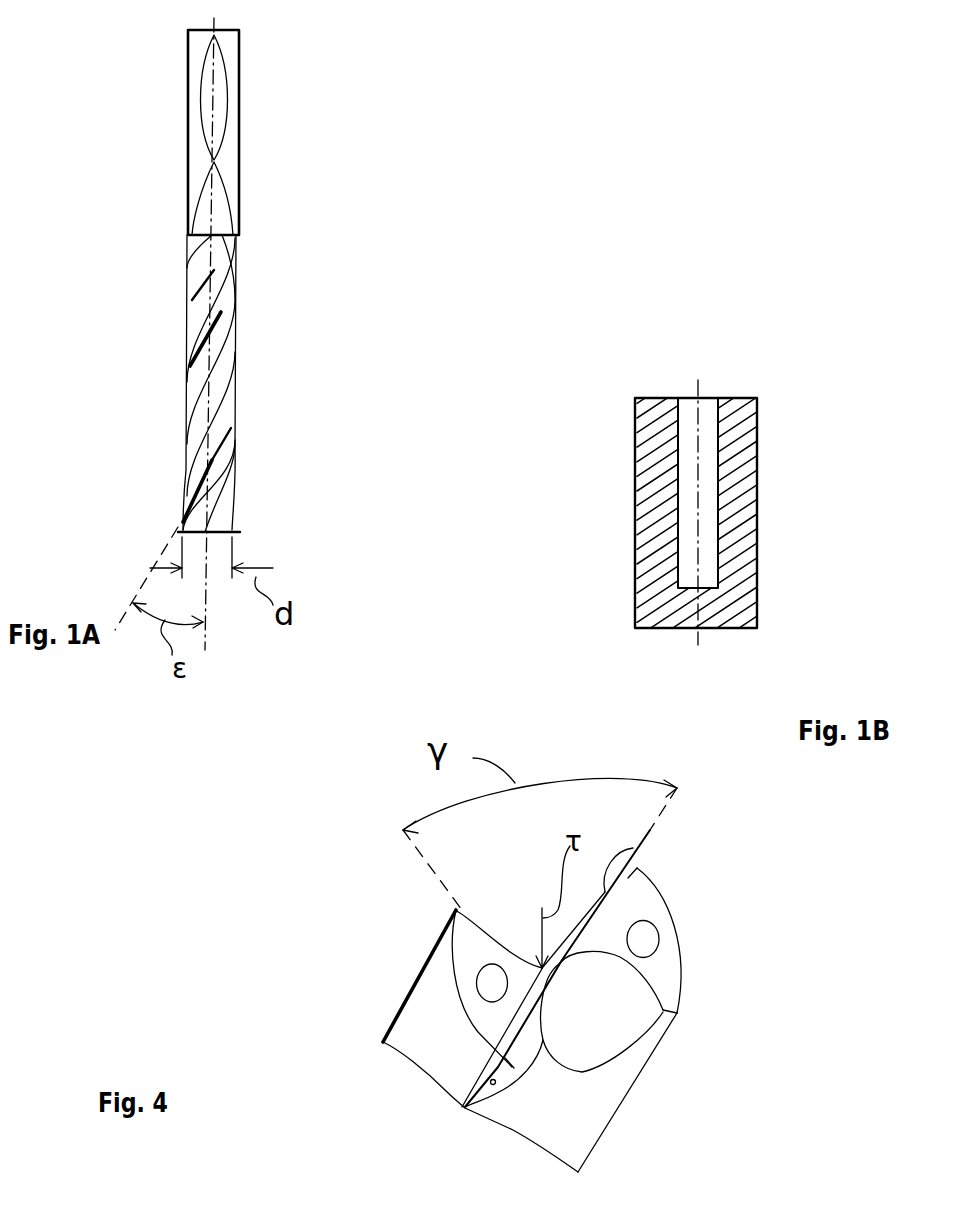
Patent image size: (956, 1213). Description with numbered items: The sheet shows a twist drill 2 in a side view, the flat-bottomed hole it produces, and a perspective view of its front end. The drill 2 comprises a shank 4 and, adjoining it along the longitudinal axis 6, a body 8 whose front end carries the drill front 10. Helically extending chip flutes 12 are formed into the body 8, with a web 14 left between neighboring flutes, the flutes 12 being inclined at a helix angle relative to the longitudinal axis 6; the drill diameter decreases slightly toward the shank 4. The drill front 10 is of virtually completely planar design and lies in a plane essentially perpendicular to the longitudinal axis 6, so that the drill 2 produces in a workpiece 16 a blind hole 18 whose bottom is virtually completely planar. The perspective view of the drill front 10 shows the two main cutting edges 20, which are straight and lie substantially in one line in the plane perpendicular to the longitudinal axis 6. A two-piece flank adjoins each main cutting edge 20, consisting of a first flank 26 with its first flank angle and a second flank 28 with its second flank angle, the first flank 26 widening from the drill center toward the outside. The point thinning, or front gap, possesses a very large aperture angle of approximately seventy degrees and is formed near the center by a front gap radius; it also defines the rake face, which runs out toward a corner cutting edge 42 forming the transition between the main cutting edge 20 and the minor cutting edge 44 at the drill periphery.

In FIG. 1A, the drill 2 is at (383, 118).
In FIG. 1A, the shank 4 is at (187, 135).
In FIG. 1A, the longitudinal axis 6 is at (205, 432).
In FIG. 1A, the body 8 is at (139, 363).
In FIG. 1A, the drill front 10 is at (163, 546).
In FIG. 1A, the chip flutes 12 is at (202, 316).
In FIG. 4, the chip flutes 12 is at (527, 920).
In FIG. 1A, the web 14 is at (198, 360).
In FIG. 4, the web 14 is at (422, 1009).
In FIG. 1B, the workpiece 16 is at (650, 498).
In FIG. 1B, the blind hole 18 is at (707, 503).
In FIG. 4, the main cutting edges 20 is at (628, 853).
In FIG. 4, the first flank 26 is at (628, 884).
In FIG. 4, the second flank 28 is at (663, 970).
In FIG. 4, the corner cutting edge 42 is at (512, 1065).
In FIG. 4, the minor cutting edge 44 is at (493, 1082).